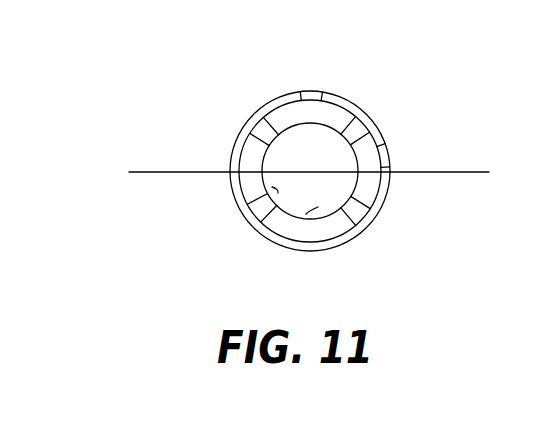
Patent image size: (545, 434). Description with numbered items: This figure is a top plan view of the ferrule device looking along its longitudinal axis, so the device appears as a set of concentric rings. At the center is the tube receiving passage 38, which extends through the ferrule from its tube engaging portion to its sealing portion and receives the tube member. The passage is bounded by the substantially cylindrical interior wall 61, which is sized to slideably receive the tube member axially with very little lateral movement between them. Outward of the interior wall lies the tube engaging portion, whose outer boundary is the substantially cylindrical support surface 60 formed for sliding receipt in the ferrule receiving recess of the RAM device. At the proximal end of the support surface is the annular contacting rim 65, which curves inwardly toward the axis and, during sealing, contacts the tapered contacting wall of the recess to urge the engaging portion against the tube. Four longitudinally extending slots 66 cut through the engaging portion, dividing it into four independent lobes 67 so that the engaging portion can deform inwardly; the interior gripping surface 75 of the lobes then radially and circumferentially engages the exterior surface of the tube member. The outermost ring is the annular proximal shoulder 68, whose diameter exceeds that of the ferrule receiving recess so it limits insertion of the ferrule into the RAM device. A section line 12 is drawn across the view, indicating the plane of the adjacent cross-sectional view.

The section line 12- 12 is at (129, 172).
The tube receiving passage 38 is at (318, 163).
The support surface 60 is at (322, 92).
The interior wall 61 is at (278, 192).
The contacting rim 65 is at (278, 113).
The slot 66 is at (352, 128).
The lobe 67 is at (300, 102).
The annular proximal shoulder 68 is at (353, 233).
The interior gripping surface 75 is at (318, 207).